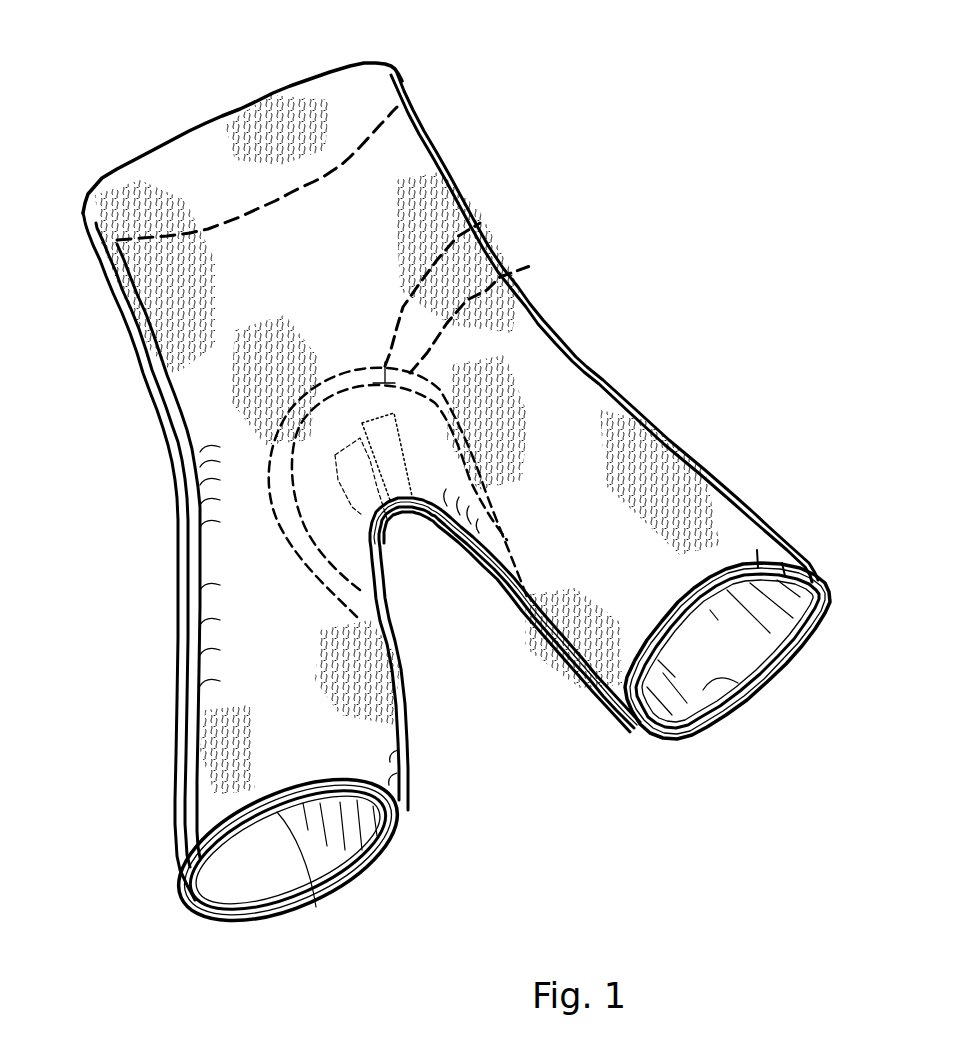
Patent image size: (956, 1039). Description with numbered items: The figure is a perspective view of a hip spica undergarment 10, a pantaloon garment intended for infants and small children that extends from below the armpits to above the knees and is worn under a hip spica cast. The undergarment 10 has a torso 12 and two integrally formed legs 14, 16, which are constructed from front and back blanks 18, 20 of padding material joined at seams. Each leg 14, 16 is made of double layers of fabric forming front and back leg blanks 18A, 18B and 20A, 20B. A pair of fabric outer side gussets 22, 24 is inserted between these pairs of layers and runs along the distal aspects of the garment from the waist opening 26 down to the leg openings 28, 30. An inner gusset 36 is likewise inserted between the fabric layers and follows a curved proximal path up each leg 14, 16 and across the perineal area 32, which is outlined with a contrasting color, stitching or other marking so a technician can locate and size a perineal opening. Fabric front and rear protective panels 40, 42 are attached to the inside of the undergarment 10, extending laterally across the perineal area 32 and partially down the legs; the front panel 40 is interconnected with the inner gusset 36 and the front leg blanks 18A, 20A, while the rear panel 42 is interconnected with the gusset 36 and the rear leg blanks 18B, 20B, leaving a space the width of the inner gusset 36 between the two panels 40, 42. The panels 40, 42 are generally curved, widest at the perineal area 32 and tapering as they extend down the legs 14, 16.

The hip spica undergarment 10 is at (87, 337).
The torso 12 is at (243, 277).
The leg 14 is at (268, 735).
The leg 16 is at (590, 402).
The front blank 18 is at (380, 239).
The front leg blank 18A is at (757, 550).
The back leg blank 18B is at (783, 563).
The back blank 20 is at (198, 455).
The front leg blank 20A is at (200, 913).
The back leg blank 20B is at (240, 915).
The outer side gusset 22 is at (195, 583).
The outer side gusset 24 is at (729, 500).
The waist opening 26 is at (183, 160).
The leg opening 28 is at (316, 907).
The leg opening 30 is at (743, 697).
The perineal area 32 is at (407, 525).
The inner gusset 36 is at (393, 742).
The front protective panel 40 is at (480, 223).
The rear protective panel 42 is at (530, 266).